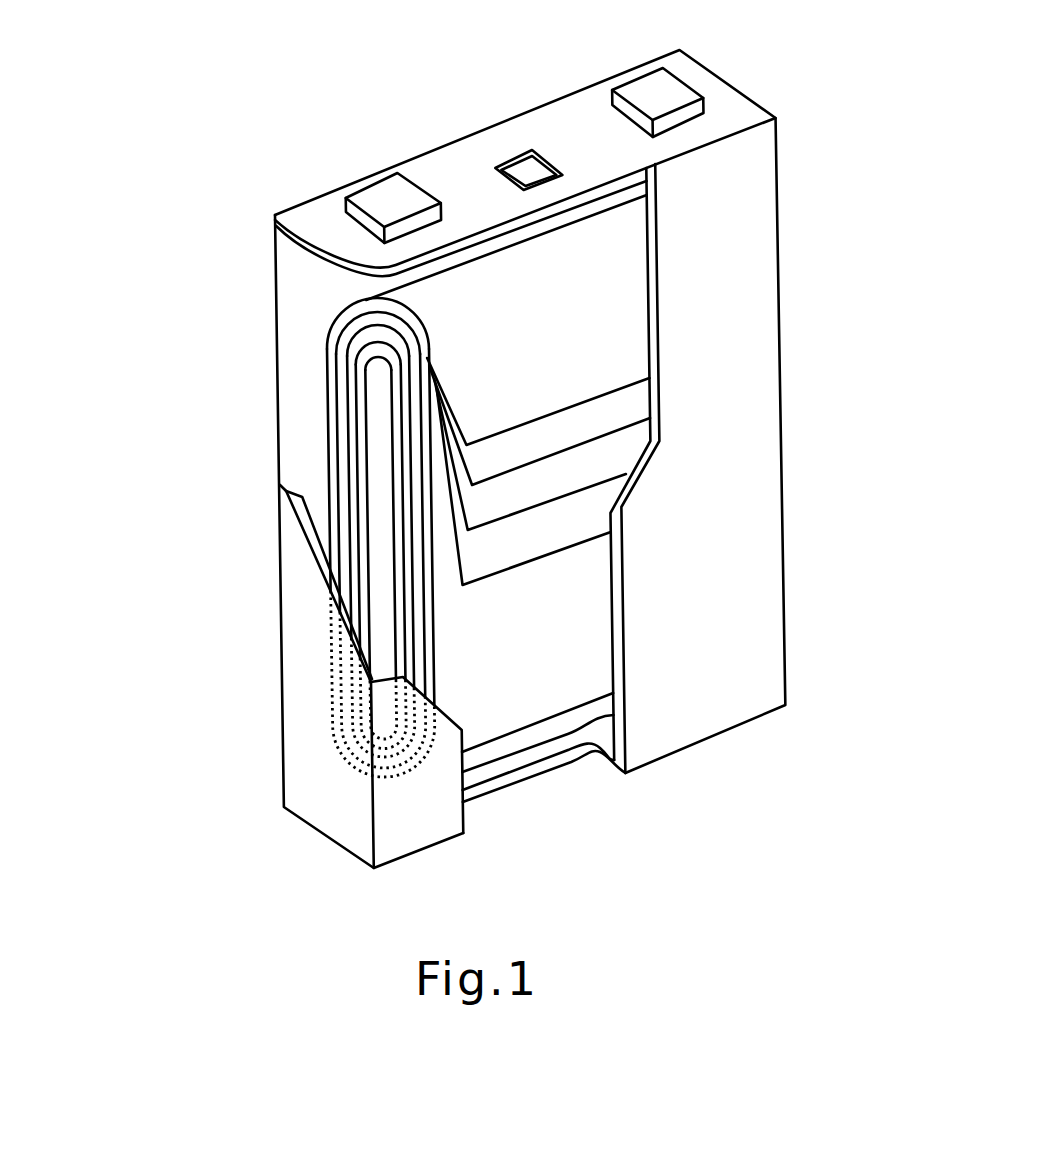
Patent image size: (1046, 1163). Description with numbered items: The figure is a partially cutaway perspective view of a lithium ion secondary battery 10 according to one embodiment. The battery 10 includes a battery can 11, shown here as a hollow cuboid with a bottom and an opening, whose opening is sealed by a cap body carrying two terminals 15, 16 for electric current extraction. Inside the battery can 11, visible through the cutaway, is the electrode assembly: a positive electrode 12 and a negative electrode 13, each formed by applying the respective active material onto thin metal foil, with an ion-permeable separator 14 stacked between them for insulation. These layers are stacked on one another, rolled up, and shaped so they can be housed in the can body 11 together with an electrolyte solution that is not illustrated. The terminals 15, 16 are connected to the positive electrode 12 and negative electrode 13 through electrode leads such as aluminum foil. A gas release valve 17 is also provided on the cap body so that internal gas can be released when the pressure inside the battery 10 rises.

The battery 10 is at (228, 511).
The battery can 11 is at (404, 788).
The positive electrode 12 is at (624, 402).
The negative electrode 13 is at (470, 548).
The separator 14 is at (623, 450).
The terminal 15 is at (677, 98).
The terminal 16 is at (398, 197).
The gas release valve 17 is at (523, 167).